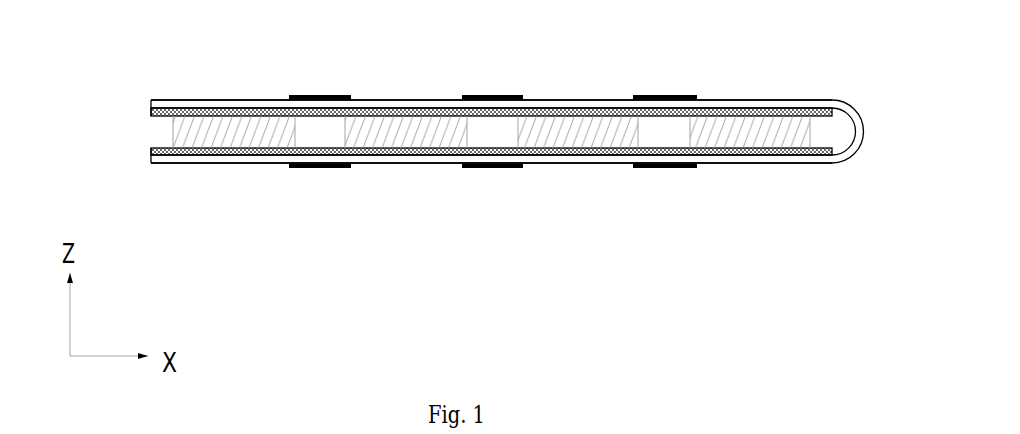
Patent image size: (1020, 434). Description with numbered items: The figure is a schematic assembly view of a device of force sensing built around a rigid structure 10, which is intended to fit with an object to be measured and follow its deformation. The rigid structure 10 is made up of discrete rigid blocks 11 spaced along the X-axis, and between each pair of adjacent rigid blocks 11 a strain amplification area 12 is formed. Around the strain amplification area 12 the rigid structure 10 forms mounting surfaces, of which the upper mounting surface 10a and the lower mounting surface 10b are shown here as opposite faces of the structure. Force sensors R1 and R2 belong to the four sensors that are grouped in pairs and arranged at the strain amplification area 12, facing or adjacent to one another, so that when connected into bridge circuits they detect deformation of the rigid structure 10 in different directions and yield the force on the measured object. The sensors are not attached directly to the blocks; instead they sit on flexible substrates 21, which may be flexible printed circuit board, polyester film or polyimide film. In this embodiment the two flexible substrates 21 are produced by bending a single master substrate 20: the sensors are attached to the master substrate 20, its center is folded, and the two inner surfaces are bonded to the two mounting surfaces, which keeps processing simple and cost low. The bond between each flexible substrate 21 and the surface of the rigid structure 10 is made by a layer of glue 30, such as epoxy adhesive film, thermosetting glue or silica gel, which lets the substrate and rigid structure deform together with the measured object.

The rigid structure 10 is at (459, 136).
The mounting surface 10a is at (213, 108).
The mounting surface 10b is at (735, 157).
The rigid block 11 is at (222, 138).
The strain amplification area 12 is at (498, 132).
The master substrate 20 is at (471, 140).
The flexible substrate 21 is at (182, 105).
The glue 30 is at (151, 110).
The force sensor R1 is at (320, 96).
The force sensor R2 is at (327, 168).